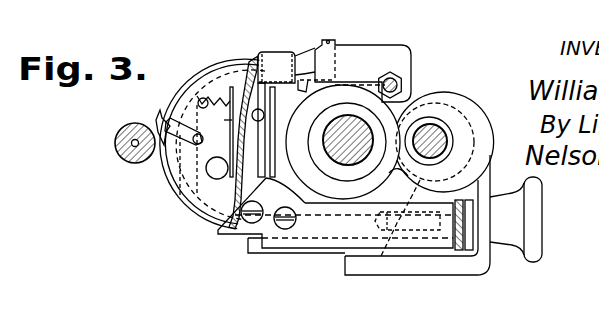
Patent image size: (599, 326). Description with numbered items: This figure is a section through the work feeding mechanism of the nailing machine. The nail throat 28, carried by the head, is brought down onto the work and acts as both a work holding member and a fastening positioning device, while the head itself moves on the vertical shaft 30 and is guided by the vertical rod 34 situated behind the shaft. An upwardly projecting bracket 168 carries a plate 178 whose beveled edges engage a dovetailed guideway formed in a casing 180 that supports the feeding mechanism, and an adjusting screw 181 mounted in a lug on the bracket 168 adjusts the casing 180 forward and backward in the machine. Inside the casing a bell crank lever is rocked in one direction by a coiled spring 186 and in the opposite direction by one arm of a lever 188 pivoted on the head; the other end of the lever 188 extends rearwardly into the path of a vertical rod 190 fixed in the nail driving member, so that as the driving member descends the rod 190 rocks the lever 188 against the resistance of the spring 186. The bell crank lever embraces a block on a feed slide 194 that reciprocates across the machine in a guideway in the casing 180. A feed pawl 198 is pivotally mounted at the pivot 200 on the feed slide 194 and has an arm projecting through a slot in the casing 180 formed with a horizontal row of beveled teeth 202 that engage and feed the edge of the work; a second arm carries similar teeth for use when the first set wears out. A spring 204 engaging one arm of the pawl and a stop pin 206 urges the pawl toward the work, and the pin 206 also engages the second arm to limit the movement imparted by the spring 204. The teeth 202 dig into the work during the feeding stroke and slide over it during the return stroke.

The nail throat 28 is at (116, 148).
The vertical shaft 30 is at (360, 133).
The vertical rod 34 is at (440, 137).
The bracket 168 is at (400, 258).
The plate 178 is at (255, 243).
The casing 180 is at (322, 222).
The adjusting screw 181 is at (515, 216).
The coiled spring 186 is at (262, 160).
The lever 188 is at (352, 55).
The vertical rod 190 is at (396, 80).
The feed slide 194 is at (188, 206).
The feed pawl 198 is at (197, 83).
The pivot 200 is at (208, 172).
The beveled teeth 202 is at (185, 108).
The spring 204 is at (184, 99).
The stop pin 206 is at (207, 83).